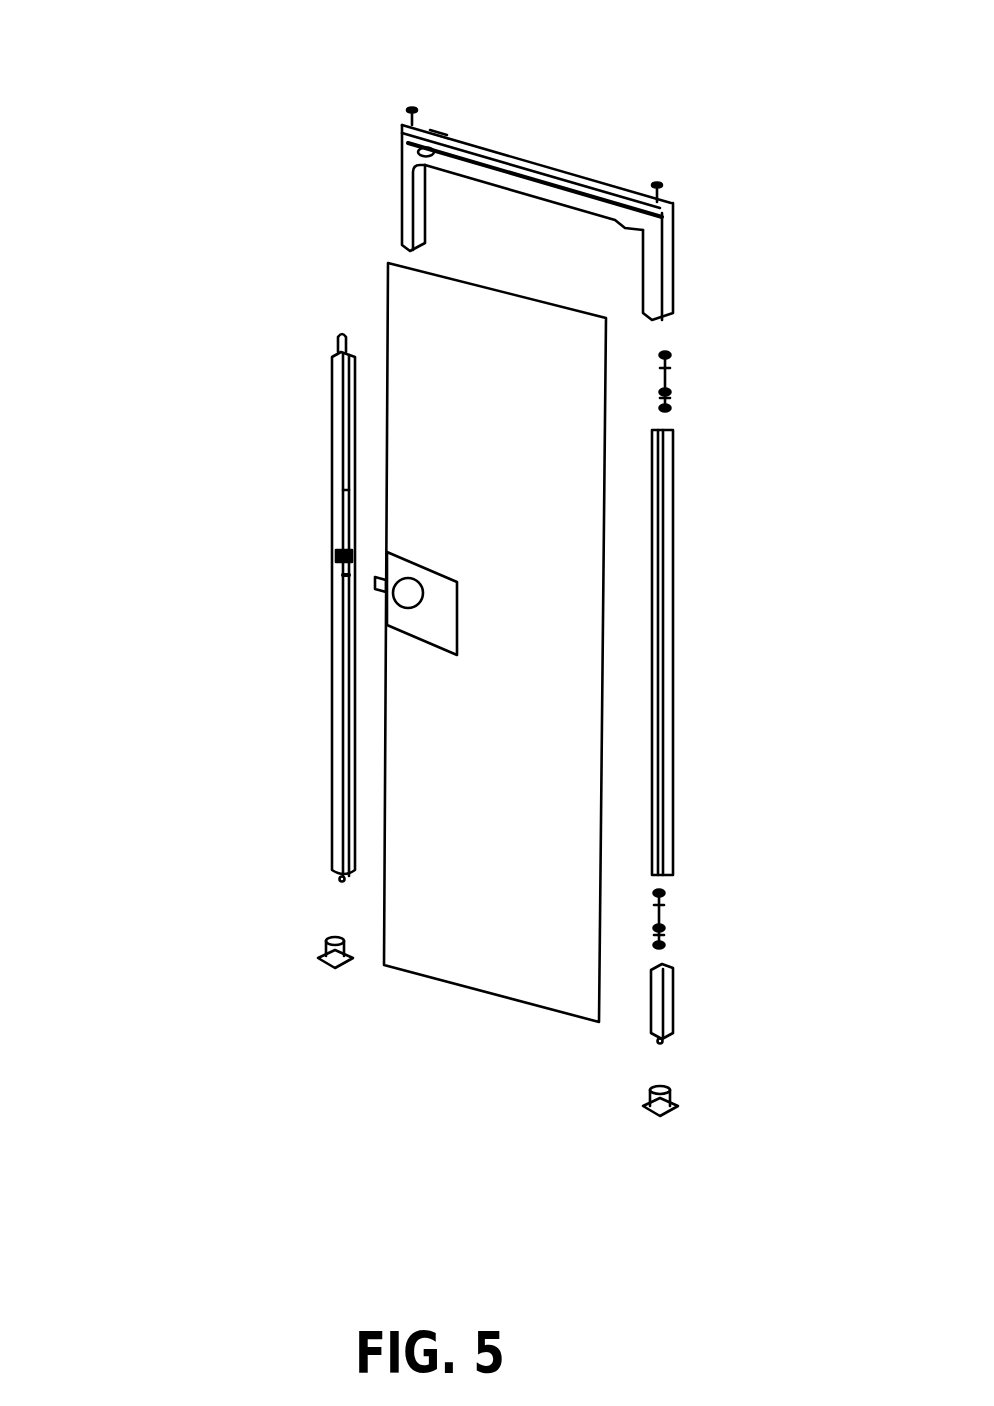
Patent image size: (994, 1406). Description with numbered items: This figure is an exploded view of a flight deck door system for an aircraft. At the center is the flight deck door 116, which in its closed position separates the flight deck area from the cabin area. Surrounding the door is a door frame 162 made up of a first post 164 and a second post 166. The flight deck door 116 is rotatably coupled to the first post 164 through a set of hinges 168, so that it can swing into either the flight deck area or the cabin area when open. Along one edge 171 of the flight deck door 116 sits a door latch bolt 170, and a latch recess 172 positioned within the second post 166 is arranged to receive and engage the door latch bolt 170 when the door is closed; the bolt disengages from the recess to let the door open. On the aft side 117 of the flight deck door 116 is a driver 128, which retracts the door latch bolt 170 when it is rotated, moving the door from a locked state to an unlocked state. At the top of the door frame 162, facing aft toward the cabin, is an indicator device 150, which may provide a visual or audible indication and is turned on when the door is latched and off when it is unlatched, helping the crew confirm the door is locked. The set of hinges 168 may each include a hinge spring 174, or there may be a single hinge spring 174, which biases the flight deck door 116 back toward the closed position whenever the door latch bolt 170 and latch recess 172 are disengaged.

The flight deck door 116 is at (418, 977).
The aft side 117 is at (553, 965).
The driver 128 is at (409, 578).
The indicator device 150 is at (432, 137).
The door frame 162 is at (424, 531).
The first post 164 is at (668, 510).
The second post 166 is at (335, 382).
The set of hinges 168 is at (668, 392).
The door latch bolt 170 is at (375, 578).
The edge 171 is at (383, 928).
The latch recess 172 is at (335, 555).
The hinge spring 174 is at (668, 367).